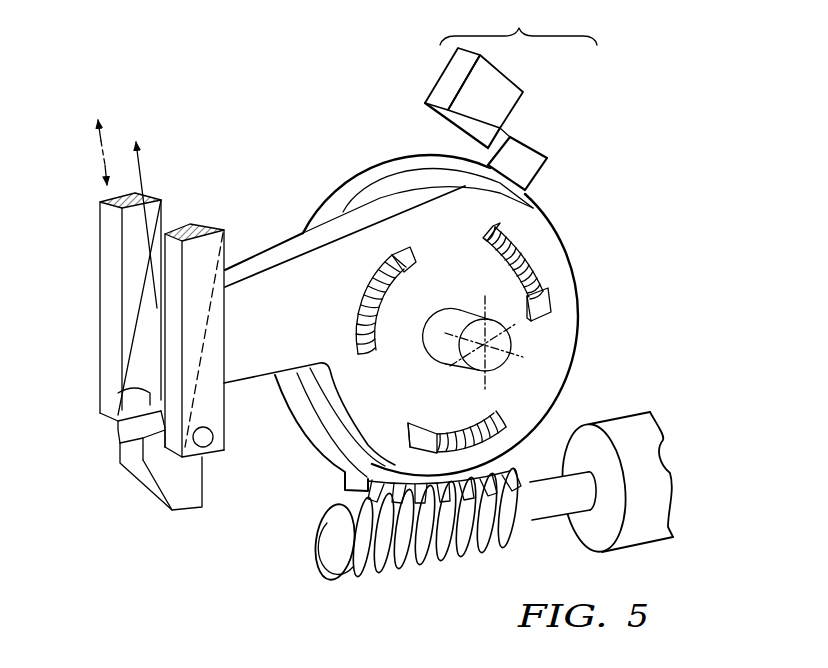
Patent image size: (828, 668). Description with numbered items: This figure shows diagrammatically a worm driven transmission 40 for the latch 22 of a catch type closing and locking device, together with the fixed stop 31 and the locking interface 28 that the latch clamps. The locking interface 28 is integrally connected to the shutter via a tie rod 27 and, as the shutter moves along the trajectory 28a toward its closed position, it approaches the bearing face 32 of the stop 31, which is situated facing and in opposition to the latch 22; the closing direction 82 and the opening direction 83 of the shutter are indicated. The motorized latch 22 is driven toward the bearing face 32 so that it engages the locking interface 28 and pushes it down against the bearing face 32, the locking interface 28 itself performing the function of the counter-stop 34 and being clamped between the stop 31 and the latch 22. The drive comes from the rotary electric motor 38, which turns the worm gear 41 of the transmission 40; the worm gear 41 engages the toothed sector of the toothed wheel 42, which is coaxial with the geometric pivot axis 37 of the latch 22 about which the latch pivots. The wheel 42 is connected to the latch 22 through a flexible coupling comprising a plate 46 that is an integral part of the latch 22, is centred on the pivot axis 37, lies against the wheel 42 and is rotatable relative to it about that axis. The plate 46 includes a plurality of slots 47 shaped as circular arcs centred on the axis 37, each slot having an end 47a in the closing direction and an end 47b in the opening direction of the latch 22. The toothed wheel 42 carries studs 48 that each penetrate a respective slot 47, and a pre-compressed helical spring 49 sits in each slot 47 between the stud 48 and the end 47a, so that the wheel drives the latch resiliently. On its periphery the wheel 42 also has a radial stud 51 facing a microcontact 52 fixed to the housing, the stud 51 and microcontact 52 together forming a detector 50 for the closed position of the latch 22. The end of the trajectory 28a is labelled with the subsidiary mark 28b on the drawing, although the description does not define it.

The latch 22 is at (273, 288).
The tie rod 27 is at (175, 247).
The locking interface 28 is at (99, 399).
The counter-stop 34 is at (140, 407).
The trajectory of the locking interface 28a is at (143, 170).
The latch plate 28b is at (138, 427).
The stop 31 is at (167, 480).
The bearing face 32 is at (140, 433).
The geometric pivot axis 37 is at (517, 360).
The rotary electric motor 38 is at (643, 445).
The transmission 40 is at (439, 555).
The worm gear 41 is at (335, 532).
The toothed wheel 42 is at (360, 185).
The plate 46 is at (426, 216).
The slots 47 is at (491, 329).
The slot end in the closing direction 47a is at (481, 238).
The slot end in the opening direction 47b is at (550, 330).
The studs 48 is at (540, 308).
The pre-compressed helical spring 49 is at (528, 262).
The detector for the closed position of the latch 50 is at (502, 95).
The radial stud 51 is at (532, 160).
The microcontact 52 is at (467, 93).
The direction of closing the shutter 82 is at (97, 131).
The direction of opening the shutter 83 is at (100, 163).